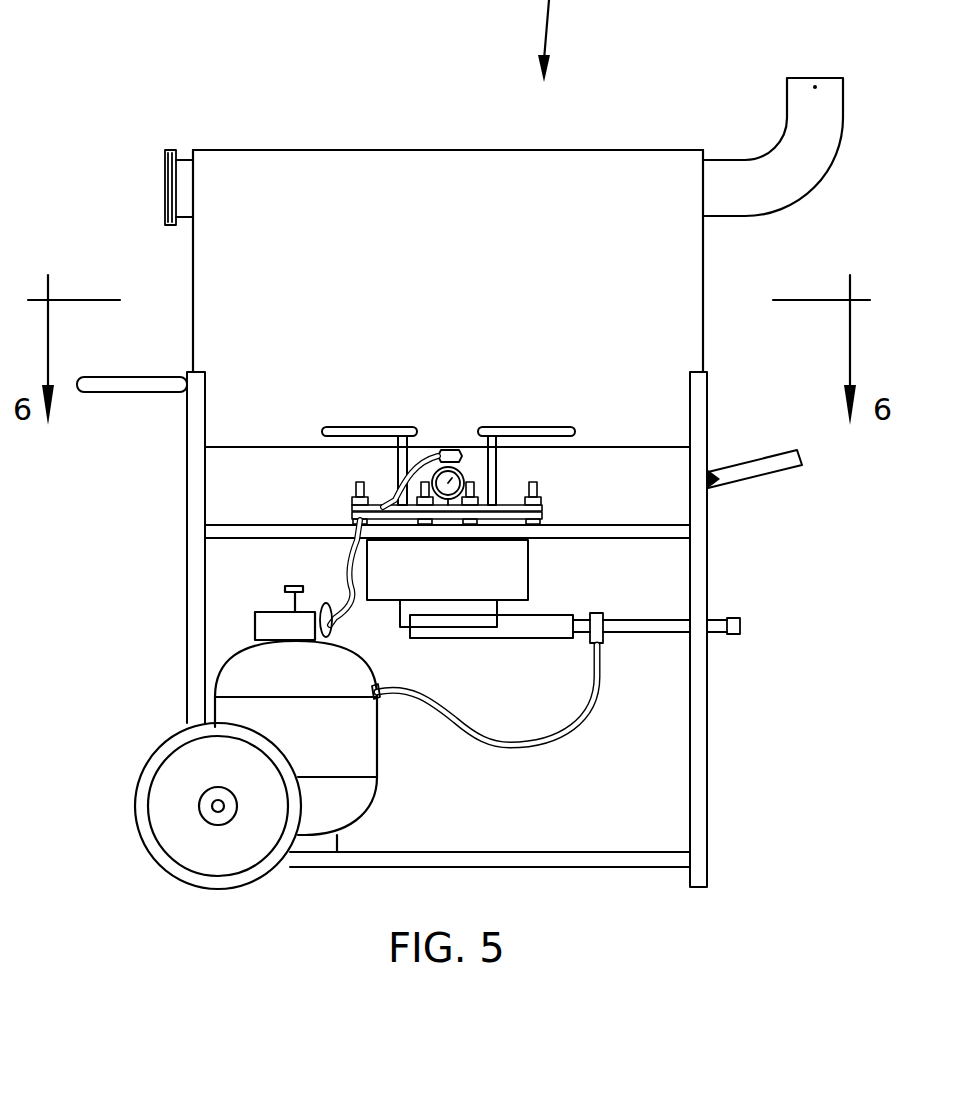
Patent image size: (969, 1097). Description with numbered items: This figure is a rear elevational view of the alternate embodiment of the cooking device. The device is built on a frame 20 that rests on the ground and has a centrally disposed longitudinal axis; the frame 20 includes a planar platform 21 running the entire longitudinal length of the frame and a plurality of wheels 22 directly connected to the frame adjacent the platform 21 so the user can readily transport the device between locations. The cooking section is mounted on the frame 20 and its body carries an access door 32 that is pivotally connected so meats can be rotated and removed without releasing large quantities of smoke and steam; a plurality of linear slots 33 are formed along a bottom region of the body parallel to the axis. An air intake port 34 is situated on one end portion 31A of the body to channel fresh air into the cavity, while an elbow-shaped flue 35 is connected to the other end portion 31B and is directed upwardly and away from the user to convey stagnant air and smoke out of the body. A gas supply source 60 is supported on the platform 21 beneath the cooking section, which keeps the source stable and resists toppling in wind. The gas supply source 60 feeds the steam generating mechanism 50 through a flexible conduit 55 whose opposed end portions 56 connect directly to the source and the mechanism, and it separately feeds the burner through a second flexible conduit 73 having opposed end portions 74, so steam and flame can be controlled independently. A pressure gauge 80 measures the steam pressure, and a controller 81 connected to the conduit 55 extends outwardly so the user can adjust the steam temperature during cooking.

The frame 20 is at (439, 672).
The planar platform 21 is at (570, 858).
The wheels 22 is at (206, 838).
The one end portion of the body 31A is at (193, 290).
The another end portion of the body 31B is at (707, 280).
The access door 32 is at (442, 218).
The linear slots 33 is at (360, 420).
The air intake port 34 is at (165, 145).
The flue 35 is at (805, 90).
The steam generating mechanism 50 is at (527, 572).
The flexible conduit 55 is at (535, 745).
The opposed end portions 56 is at (380, 672).
The gas supply source 60 is at (342, 745).
The flexible conduit 73 is at (355, 553).
The opposed end portions 74 is at (427, 458).
The pressure gauge 80 is at (463, 475).
The controller 81 is at (732, 618).